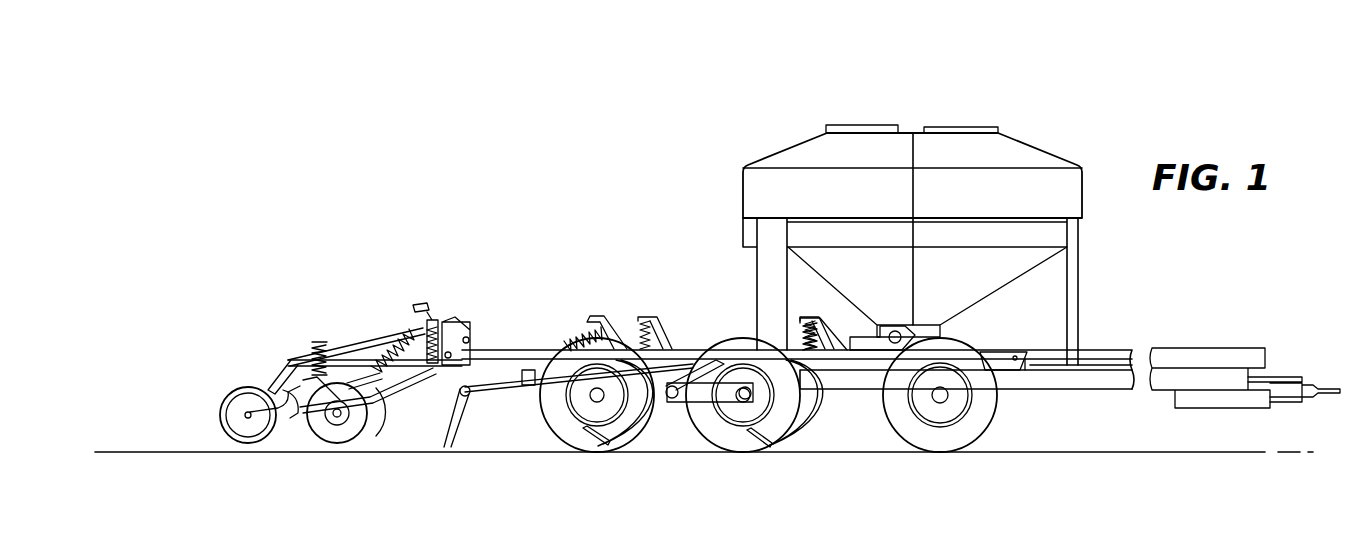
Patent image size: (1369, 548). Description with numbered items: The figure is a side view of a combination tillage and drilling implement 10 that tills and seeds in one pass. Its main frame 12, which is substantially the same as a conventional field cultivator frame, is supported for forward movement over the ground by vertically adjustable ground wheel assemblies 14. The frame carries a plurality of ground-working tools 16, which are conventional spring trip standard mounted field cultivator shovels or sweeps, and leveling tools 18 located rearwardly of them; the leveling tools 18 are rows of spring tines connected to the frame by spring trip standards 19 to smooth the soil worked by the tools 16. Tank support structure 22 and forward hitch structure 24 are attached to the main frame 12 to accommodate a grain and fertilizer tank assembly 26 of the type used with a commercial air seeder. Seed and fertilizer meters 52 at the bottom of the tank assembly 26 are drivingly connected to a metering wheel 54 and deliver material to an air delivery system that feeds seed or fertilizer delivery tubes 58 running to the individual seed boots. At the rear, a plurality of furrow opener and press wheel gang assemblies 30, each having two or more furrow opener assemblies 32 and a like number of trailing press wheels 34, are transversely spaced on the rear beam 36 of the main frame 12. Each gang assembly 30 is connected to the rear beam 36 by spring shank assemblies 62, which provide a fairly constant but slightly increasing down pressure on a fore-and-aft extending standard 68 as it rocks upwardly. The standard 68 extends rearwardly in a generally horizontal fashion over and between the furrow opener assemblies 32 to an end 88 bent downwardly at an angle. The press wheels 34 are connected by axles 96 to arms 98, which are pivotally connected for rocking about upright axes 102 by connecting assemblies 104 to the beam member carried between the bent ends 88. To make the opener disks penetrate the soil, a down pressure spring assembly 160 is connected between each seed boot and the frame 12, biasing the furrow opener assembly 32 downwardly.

The combination tillage and drilling implement 10 is at (818, 83).
The main frame 12 is at (528, 345).
The ground wheel assemblies 14 is at (669, 402).
The ground-working tools 16 is at (590, 440).
The leveling tools 18 is at (455, 430).
The spring trip standards 19 is at (613, 317).
The tank support structure 22 is at (1084, 265).
The forward hitch structure 24 is at (1278, 359).
The grain and fertilizer tank assembly 26 is at (915, 125).
The furrow opener and press wheel gang assembly 30 is at (335, 299).
The furrow opener assembly 32 is at (332, 451).
The press wheels 34 is at (257, 443).
The rear beam 36 is at (473, 352).
The seed and/or fertilizer meters 52 is at (949, 330).
The metering wheel 54 is at (995, 420).
The seed or fertilizer delivery tubes 58 is at (330, 345).
The spring shank assembly 62 is at (441, 312).
The standard 68 is at (361, 358).
The end of standard 88 is at (278, 378).
The axles 96 is at (245, 415).
The arms 98 is at (275, 383).
The upright axes 102 is at (301, 419).
The connecting assemblies 104 is at (244, 348).
The down pressure spring assembly 160 is at (387, 336).